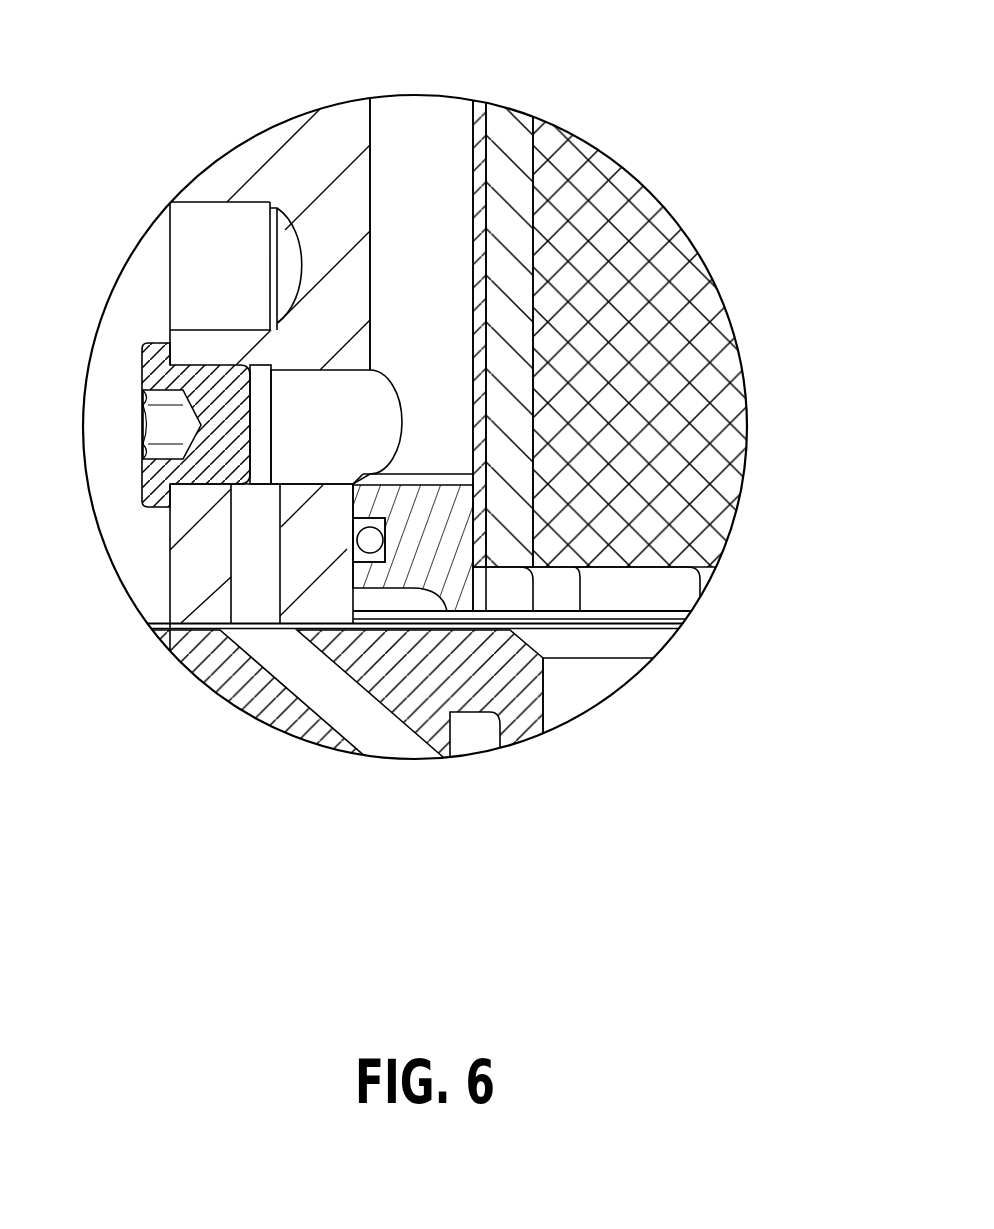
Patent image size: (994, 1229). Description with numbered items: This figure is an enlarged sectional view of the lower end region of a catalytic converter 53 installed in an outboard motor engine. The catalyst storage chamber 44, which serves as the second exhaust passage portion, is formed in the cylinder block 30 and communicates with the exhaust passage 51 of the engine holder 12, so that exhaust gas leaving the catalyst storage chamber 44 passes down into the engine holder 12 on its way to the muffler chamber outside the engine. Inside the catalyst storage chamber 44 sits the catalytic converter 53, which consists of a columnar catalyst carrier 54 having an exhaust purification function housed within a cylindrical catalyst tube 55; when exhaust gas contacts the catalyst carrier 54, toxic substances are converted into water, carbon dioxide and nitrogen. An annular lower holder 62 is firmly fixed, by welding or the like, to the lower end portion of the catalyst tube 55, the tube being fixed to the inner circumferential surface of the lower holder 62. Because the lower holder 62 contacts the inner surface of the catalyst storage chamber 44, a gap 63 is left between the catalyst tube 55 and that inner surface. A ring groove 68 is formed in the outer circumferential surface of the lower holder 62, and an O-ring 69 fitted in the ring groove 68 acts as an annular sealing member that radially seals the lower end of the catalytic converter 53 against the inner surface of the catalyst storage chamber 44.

The engine holder 12 is at (528, 710).
The cylinder block 30 is at (223, 177).
The catalyst storage chamber 44 is at (372, 163).
The exhaust passage 51 is at (583, 685).
The catalytic converter 53 is at (644, 350).
The catalyst carrier 54 is at (650, 287).
The catalyst tube 55 is at (473, 153).
The lower holder 62 is at (418, 523).
The gap 63 is at (429, 152).
The ring groove 68 is at (373, 547).
The O-ring 69 is at (352, 548).